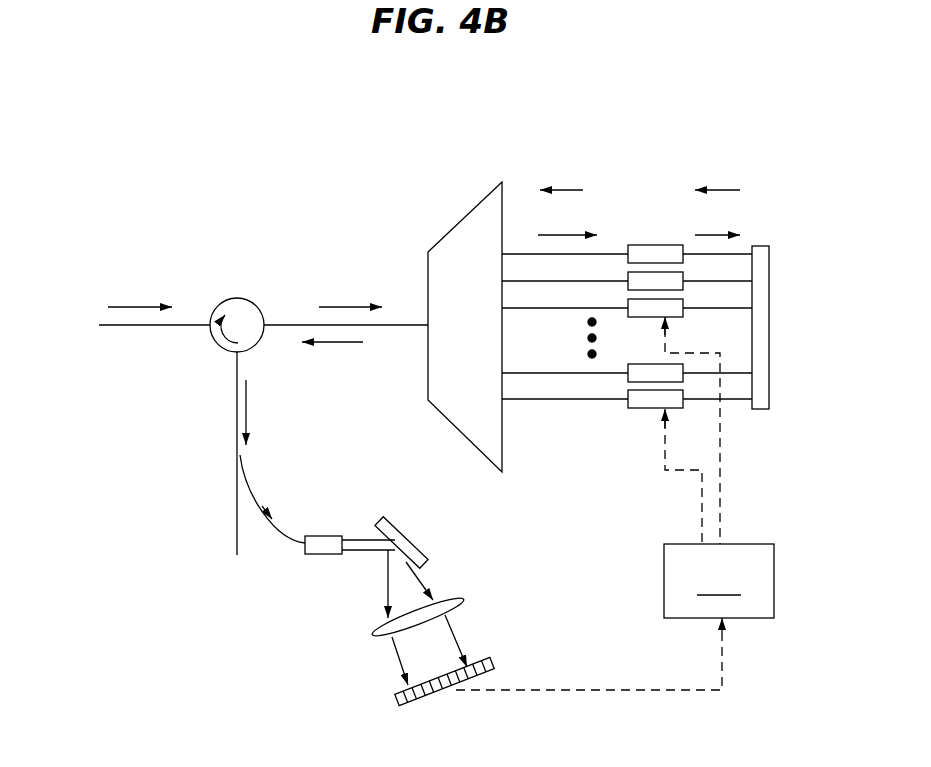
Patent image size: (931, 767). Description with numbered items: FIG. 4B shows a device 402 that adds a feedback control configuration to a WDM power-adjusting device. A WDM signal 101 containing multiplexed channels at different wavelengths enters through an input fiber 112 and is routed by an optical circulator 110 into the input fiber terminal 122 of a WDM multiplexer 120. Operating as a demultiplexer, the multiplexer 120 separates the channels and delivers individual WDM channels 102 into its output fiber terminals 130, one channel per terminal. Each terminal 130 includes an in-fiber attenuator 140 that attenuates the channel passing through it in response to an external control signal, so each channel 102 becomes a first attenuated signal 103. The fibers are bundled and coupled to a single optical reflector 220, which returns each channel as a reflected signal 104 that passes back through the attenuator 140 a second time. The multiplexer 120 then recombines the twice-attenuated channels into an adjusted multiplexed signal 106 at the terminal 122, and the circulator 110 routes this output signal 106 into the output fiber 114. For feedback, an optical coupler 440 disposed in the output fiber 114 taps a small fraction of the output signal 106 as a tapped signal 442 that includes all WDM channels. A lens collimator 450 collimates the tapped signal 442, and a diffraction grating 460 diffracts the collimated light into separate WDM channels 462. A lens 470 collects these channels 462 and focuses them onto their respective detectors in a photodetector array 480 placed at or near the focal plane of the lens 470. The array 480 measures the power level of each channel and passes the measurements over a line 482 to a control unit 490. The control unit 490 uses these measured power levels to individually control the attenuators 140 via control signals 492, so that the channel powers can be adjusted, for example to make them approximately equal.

The device 402 is at (419, 123).
The WDM signal 101 is at (137, 305).
The input fiber 112 is at (153, 330).
The optical circulator 110 is at (237, 298).
The input fiber terminal 122 is at (417, 326).
The multiplexed signal 106 is at (338, 345).
The output fiber 114 is at (232, 528).
The optical coupler 440 is at (235, 455).
The tapped signal 442 is at (263, 498).
The lens collimator 450 is at (313, 555).
The diffraction grating 460 is at (415, 542).
The separate WDM channels 462 is at (383, 580).
The lens 470 is at (462, 600).
The photodetector array 480 is at (497, 666).
The detector output line 482 is at (597, 690).
The control unit 490 is at (719, 581).
The control signals 492 is at (722, 477).
The in-fiber attenuator 140 is at (658, 408).
The WDM multiplexer 120 is at (447, 420).
The output fiber terminals 130 is at (565, 400).
The optical reflector 220 is at (760, 412).
The reflected signal 104 is at (570, 187).
The individual WDM channels 102 is at (572, 233).
The first attenuated signal 103 is at (713, 233).